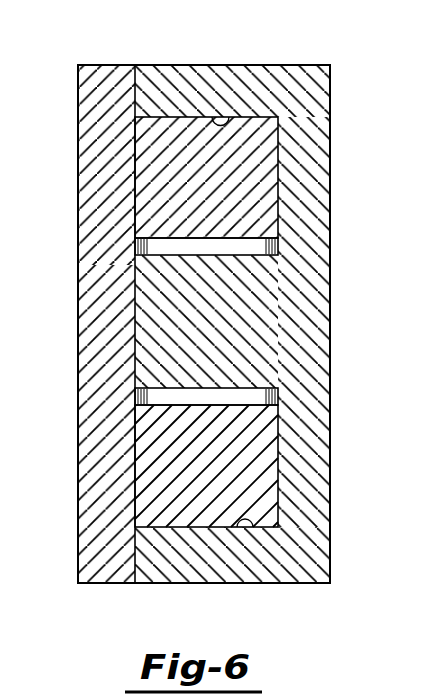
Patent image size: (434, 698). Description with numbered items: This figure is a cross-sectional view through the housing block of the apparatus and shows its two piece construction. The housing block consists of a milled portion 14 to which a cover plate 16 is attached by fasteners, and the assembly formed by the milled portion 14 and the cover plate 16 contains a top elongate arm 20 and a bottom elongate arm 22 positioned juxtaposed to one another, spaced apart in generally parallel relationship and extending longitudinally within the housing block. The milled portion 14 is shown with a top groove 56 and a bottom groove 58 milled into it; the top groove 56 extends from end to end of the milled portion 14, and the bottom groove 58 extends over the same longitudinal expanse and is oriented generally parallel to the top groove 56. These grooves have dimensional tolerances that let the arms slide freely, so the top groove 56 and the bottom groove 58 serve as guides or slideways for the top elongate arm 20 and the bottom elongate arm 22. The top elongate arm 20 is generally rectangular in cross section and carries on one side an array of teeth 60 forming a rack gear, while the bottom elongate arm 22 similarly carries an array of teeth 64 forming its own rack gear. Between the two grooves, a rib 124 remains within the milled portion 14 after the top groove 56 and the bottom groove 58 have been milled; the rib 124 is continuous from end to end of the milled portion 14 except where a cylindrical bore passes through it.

The milled portion 14 is at (262, 65).
The cover plate 16 is at (102, 65).
The top elongate arm 20 is at (278, 181).
The bottom elongate arm 22 is at (278, 462).
The top groove 56 is at (216, 117).
The bottom groove 58 is at (248, 518).
The array of teeth 60 is at (278, 246).
The array of teeth 64 is at (278, 397).
The rib 124 is at (134, 303).